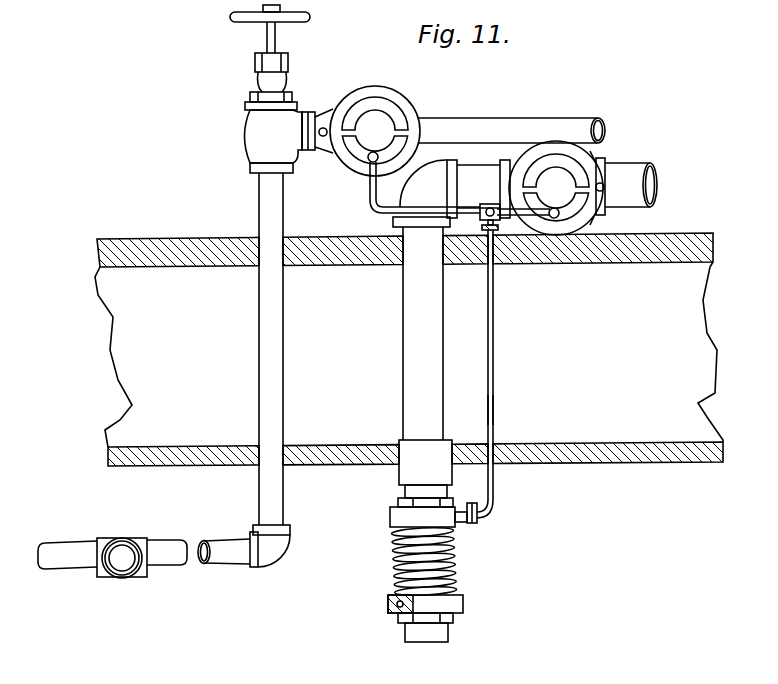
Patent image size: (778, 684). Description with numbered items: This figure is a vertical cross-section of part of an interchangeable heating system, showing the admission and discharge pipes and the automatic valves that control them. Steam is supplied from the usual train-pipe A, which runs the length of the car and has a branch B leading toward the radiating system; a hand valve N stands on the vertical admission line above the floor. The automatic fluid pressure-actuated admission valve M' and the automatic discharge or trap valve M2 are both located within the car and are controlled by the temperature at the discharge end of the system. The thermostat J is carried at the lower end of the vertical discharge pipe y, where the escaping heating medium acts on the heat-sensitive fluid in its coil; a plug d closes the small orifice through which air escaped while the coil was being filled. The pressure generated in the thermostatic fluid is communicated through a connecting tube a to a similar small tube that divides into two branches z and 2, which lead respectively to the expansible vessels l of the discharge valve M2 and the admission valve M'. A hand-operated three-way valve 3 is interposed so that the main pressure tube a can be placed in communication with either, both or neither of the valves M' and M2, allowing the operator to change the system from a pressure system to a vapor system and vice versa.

The stop valve N is at (255, 131).
The automatic admission valve M' is at (367, 121).
The automatic discharge valve M2 is at (528, 145).
The expansible vessel l is at (352, 148).
The branch 2 is at (368, 198).
The three-way valve 3 is at (489, 205).
The branch z is at (517, 225).
The vertical discharge pipe y is at (405, 325).
The connecting tube a is at (494, 410).
The train-pipe A is at (123, 555).
The branch B is at (223, 545).
The thermostat J is at (458, 568).
The plug d is at (388, 606).